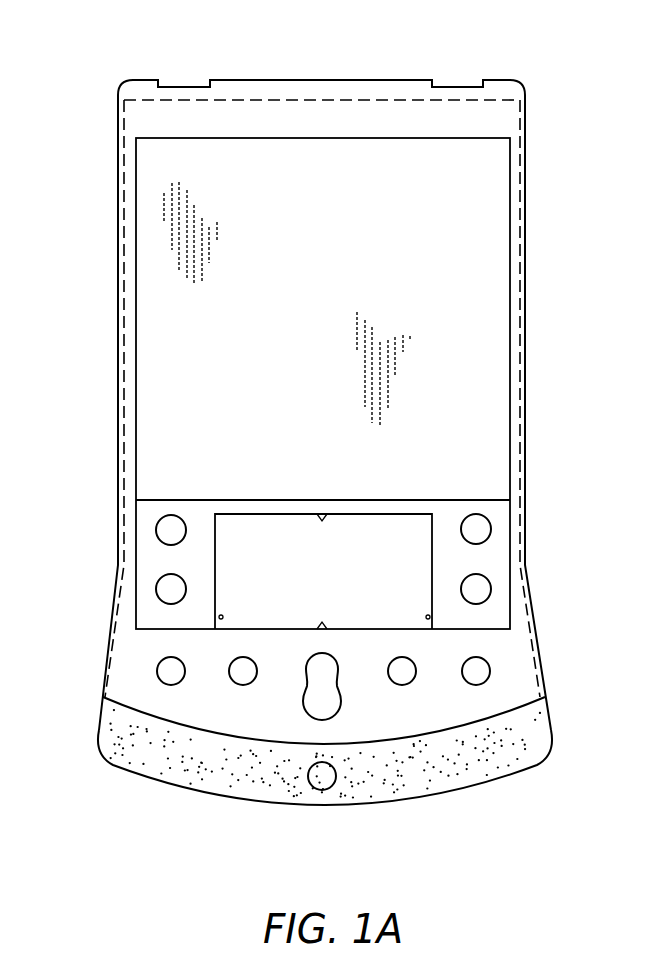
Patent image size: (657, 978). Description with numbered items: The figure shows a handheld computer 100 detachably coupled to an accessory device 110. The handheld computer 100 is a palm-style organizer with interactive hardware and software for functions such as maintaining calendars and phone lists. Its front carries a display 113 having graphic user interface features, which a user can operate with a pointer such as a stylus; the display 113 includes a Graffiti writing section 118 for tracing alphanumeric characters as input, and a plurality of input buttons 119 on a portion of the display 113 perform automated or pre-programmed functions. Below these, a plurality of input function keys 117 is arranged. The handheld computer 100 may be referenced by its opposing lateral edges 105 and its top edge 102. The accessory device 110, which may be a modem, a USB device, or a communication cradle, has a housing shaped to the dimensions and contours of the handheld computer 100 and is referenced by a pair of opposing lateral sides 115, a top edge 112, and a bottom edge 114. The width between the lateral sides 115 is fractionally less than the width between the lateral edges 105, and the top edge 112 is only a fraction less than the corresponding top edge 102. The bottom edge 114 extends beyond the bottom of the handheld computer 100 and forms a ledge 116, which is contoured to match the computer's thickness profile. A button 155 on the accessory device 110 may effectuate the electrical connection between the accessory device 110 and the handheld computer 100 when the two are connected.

The handheld computer 100 is at (490, 54).
The top edge 102 is at (273, 80).
The lateral edges 105 is at (117, 306).
The accessory device 110 is at (171, 793).
The top edge 112 is at (333, 99).
The display 113 is at (442, 207).
The bottom edge 114 is at (443, 793).
The lateral sides 115 is at (122, 412).
The ledge 116 is at (220, 733).
The input function keys 117 is at (167, 670).
The Graffiti writing section 118 is at (394, 557).
The input buttons 119 is at (165, 590).
The button 155 is at (327, 783).